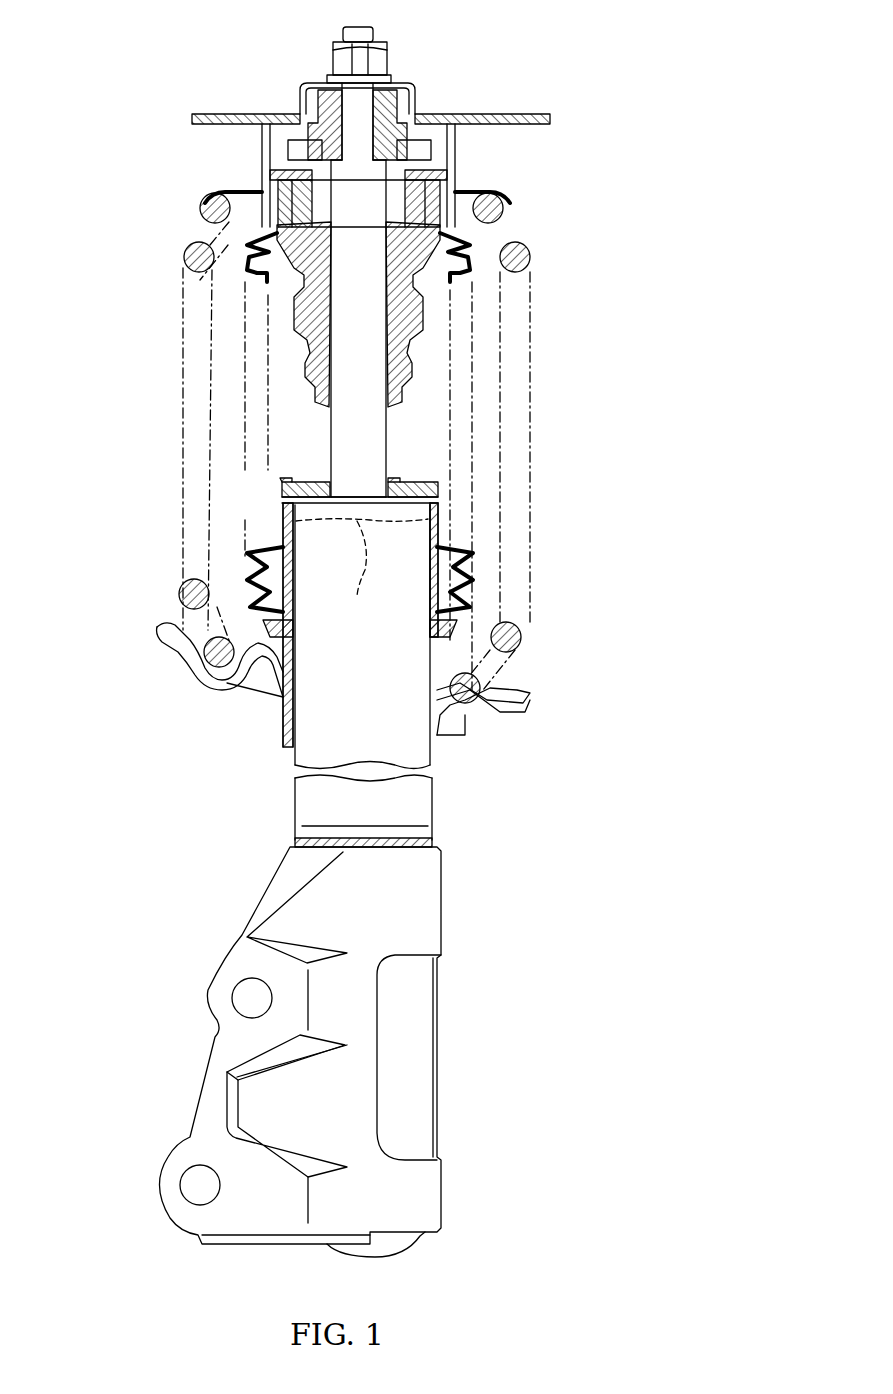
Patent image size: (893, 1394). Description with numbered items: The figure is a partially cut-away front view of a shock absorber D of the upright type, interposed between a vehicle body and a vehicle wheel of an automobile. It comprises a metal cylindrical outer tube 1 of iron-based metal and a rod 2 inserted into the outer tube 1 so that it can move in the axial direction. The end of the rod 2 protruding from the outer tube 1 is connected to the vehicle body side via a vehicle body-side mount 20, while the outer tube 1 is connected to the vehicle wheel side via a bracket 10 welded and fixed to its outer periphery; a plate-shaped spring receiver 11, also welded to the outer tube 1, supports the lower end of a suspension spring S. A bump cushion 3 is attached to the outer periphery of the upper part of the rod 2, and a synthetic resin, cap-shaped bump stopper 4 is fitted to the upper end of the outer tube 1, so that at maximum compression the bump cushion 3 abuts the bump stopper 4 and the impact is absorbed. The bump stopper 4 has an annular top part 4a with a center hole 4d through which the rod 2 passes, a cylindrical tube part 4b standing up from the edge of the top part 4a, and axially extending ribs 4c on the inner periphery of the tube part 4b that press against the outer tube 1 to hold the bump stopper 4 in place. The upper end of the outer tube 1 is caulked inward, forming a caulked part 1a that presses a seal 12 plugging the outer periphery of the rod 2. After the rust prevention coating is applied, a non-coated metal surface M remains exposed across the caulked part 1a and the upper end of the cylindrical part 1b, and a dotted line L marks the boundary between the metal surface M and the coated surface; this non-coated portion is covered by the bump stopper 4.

The vehicle body-side mount 20 is at (505, 117).
The shock absorber D is at (172, 240).
The suspension spring S is at (530, 250).
The bump cushion 3 is at (420, 310).
The rod 2 is at (395, 428).
The caulked part 1a is at (420, 472).
The bump stopper 4 is at (288, 503).
The top part 4a is at (288, 480).
The tube part 4b is at (290, 567).
The ribs 4c is at (428, 575).
The center hole 4d is at (390, 481).
The seal 12 is at (355, 495).
The metal surface M is at (300, 518).
The dotted line L is at (352, 566).
The spring receiver 11 is at (222, 683).
The outer tube 1 is at (295, 790).
The cylindrical part 1b is at (432, 803).
The bracket 10 is at (432, 930).